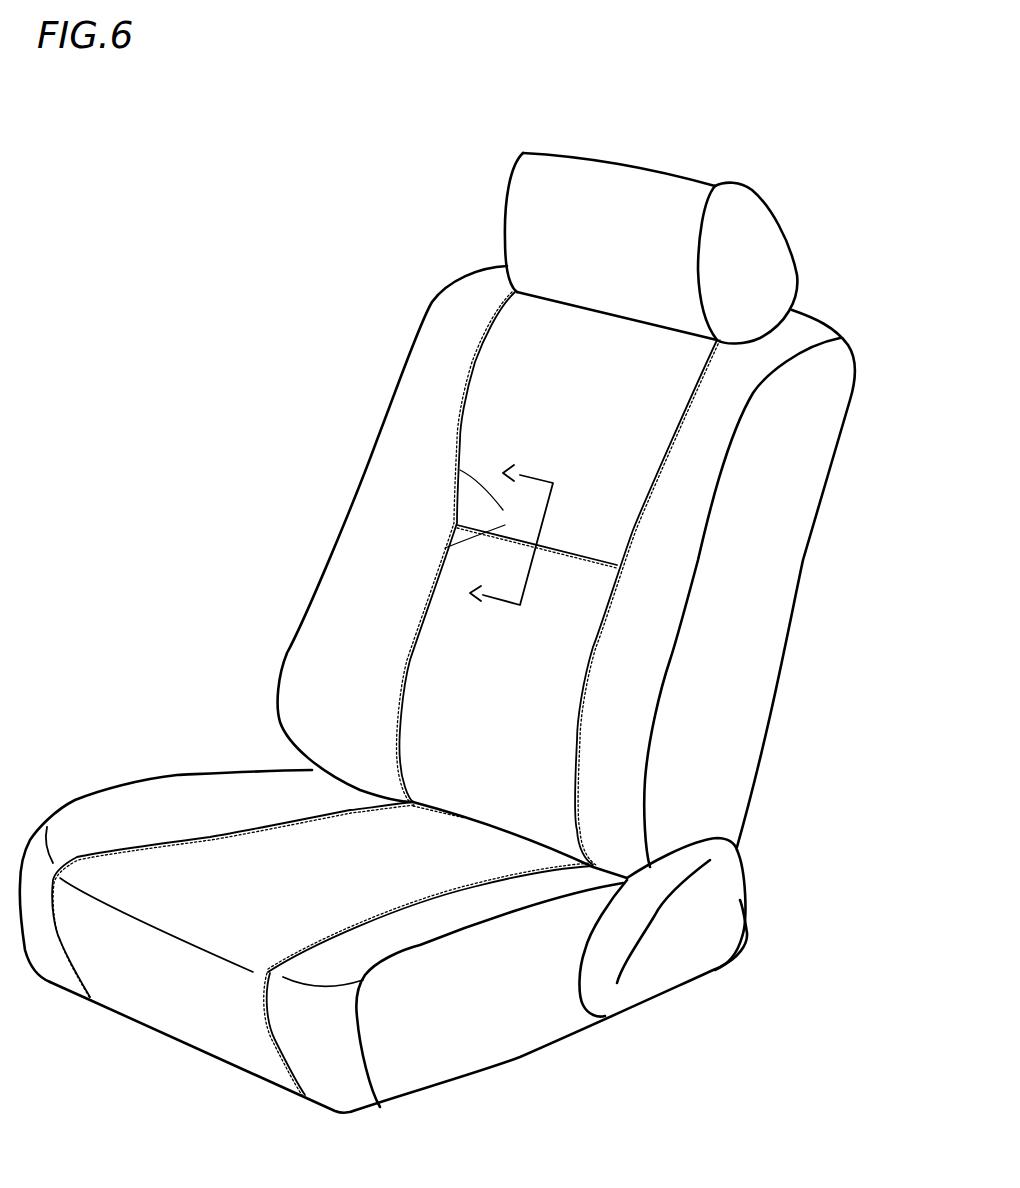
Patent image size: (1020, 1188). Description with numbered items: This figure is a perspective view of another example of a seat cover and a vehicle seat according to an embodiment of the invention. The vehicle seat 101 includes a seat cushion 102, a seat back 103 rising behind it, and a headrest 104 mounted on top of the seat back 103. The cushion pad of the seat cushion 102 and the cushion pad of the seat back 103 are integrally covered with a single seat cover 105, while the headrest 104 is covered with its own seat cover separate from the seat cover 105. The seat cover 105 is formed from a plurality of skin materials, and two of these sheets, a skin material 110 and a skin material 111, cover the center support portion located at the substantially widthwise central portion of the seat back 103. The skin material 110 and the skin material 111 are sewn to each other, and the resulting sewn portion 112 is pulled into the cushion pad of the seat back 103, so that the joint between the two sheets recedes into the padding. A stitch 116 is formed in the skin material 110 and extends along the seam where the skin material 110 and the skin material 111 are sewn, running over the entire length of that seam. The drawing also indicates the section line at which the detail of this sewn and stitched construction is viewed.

The vehicle seat 101 is at (110, 158).
The seat cushion 102 is at (568, 1044).
The seat back 103 is at (812, 547).
The headrest 104 is at (693, 168).
The seat cover 105 is at (292, 283).
The skin material 110 is at (555, 362).
The skin material 111 is at (453, 630).
The sewn portion 112 is at (445, 548).
The stitch 116 is at (511, 530).